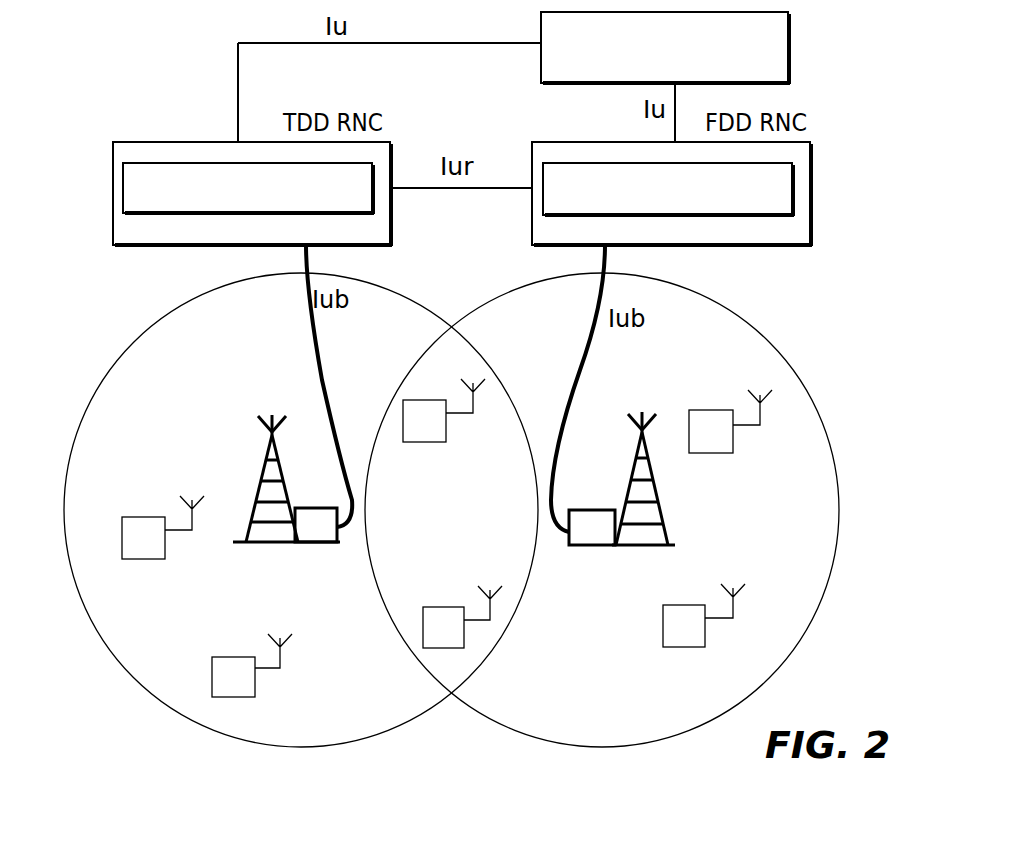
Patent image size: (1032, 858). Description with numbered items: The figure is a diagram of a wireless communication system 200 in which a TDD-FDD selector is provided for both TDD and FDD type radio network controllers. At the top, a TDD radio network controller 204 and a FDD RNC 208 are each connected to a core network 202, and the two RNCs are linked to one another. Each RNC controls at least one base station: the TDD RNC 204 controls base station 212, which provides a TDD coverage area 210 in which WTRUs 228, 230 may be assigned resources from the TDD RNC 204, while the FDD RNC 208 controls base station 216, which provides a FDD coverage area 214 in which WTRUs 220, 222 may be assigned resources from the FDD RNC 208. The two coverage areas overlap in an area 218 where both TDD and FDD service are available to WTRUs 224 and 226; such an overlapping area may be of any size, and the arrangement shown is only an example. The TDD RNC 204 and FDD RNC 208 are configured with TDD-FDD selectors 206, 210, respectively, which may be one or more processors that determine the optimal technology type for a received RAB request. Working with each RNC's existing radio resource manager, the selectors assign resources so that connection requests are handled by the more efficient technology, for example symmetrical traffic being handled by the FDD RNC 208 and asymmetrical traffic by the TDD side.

The wireless communication system 200 is at (62, 40).
The core network 202 is at (790, 37).
The TDD radio network controller 204 is at (195, 142).
The TDD-FDD selector 206 is at (123, 200).
The FDD RNC 208 is at (812, 226).
The TDD-FDD selector 210 is at (545, 212).
The base station 212 is at (285, 545).
The coverage area 214 is at (758, 332).
The base station 216 is at (650, 545).
The area 218 is at (449, 675).
The WTRU 220 is at (715, 453).
The WTRU 222 is at (674, 647).
The WTRU 224 is at (417, 400).
The WTRU 226 is at (428, 628).
The WTRU 228 is at (132, 559).
The WTRU 230 is at (240, 697).